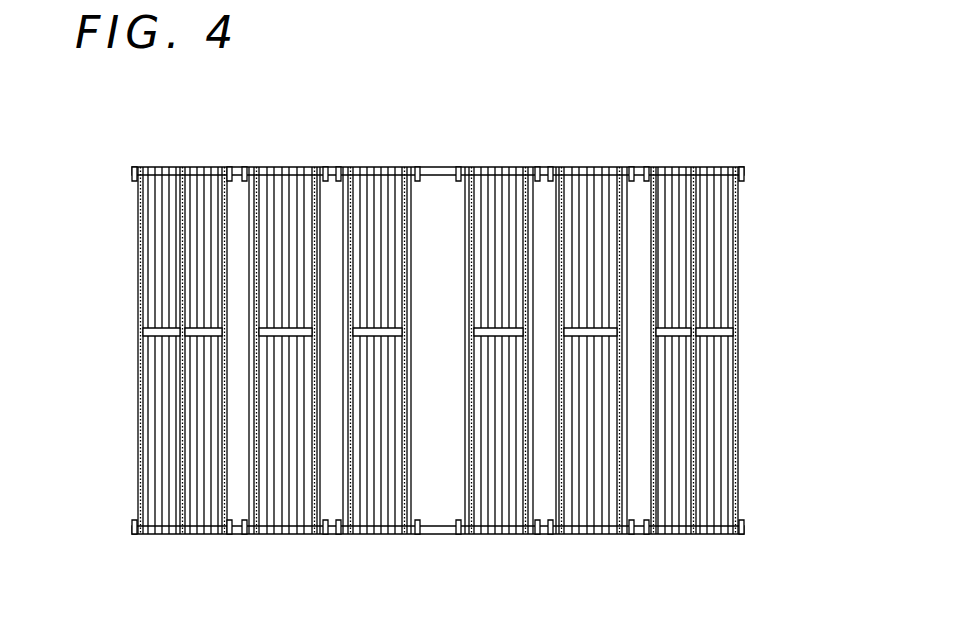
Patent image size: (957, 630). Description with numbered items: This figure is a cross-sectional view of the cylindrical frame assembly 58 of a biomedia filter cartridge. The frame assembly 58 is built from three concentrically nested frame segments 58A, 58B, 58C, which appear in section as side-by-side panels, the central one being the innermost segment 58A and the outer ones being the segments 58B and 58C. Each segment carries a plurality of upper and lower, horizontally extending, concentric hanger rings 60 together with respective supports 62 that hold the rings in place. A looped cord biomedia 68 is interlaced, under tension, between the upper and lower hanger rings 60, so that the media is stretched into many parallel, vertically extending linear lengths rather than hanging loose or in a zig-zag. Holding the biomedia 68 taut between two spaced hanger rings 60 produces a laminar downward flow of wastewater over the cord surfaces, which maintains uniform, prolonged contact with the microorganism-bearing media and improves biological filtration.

The cylindrical frame assembly 58 is at (447, 348).
The frame segment 58A is at (538, 540).
The frame segment 58B is at (647, 540).
The frame segment 58C is at (407, 348).
The hanger rings 60 is at (160, 525).
The supports 62 is at (140, 223).
The looped cord biomedia 68 is at (190, 193).